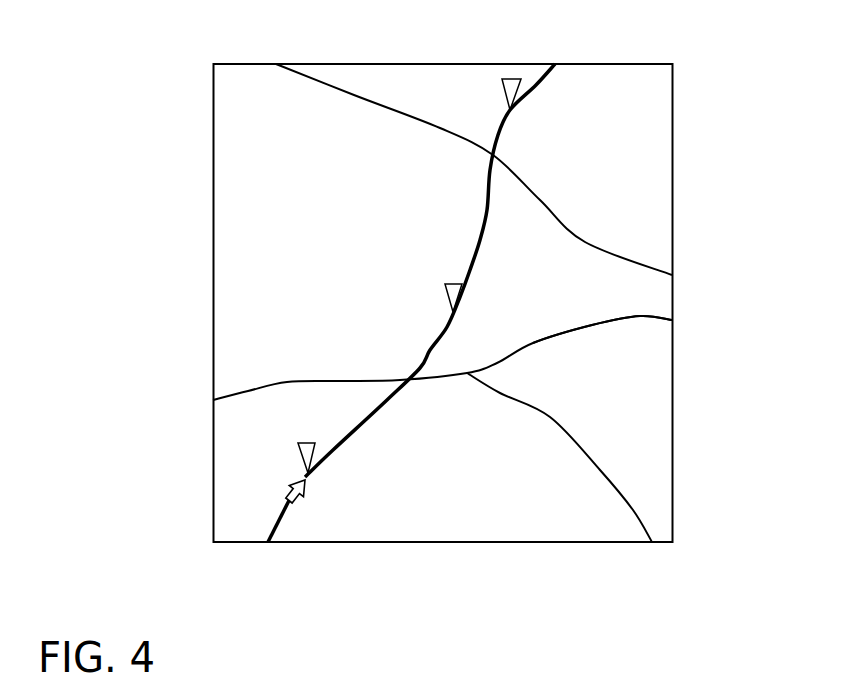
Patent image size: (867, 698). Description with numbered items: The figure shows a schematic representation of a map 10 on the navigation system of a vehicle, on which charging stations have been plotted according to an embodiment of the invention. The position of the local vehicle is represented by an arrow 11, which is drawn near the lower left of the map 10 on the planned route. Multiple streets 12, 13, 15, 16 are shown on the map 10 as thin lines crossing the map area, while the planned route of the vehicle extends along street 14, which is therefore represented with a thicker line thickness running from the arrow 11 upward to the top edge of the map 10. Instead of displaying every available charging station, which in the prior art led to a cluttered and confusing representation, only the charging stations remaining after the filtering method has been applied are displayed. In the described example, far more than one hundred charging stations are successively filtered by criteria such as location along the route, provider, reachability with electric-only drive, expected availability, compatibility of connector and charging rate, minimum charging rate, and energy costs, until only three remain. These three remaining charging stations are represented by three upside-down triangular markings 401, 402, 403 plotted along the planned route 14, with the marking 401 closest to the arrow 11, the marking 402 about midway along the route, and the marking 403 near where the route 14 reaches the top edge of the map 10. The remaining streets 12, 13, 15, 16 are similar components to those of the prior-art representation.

The map 10 is at (672, 125).
The arrow 11 is at (291, 500).
The street 12 is at (550, 417).
The street 13 is at (592, 325).
The street 14 is at (536, 85).
The street 15 is at (354, 95).
The street 16 is at (248, 391).
The marking 401 is at (300, 450).
The marking 402 is at (452, 292).
The marking 403 is at (513, 85).